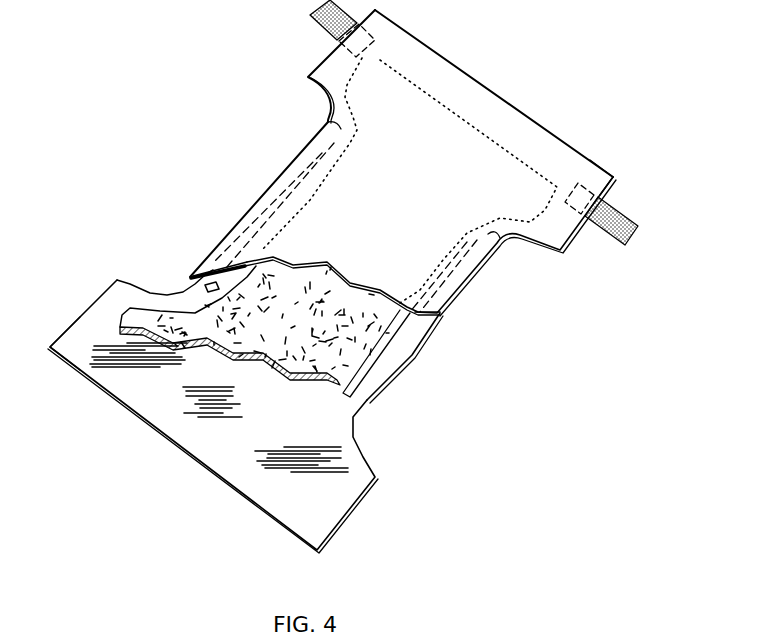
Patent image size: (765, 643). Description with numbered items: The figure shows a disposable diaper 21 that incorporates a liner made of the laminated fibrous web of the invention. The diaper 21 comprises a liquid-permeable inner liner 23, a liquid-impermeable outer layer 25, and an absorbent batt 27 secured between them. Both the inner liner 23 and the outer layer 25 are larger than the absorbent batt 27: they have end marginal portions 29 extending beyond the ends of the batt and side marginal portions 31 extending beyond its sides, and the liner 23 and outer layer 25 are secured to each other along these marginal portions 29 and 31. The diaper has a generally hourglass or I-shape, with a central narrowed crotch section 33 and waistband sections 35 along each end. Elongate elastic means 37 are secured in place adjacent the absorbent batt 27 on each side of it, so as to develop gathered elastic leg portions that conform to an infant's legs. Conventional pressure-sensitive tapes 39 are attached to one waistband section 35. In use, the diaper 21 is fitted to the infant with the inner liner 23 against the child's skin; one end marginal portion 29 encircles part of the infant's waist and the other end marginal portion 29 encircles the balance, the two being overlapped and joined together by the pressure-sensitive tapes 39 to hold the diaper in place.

The disposable diaper 21 is at (187, 128).
The inner liner 23 is at (410, 267).
The outer layer 25 is at (340, 430).
The absorbent batt 27 is at (245, 273).
The end marginal portions 29 is at (493, 108).
The side marginal portions 31 is at (324, 121).
The crotch section 33 is at (427, 332).
The waistband sections 35 is at (613, 190).
The elastic means 37 is at (192, 290).
The pressure-sensitive tapes 39 is at (318, 24).